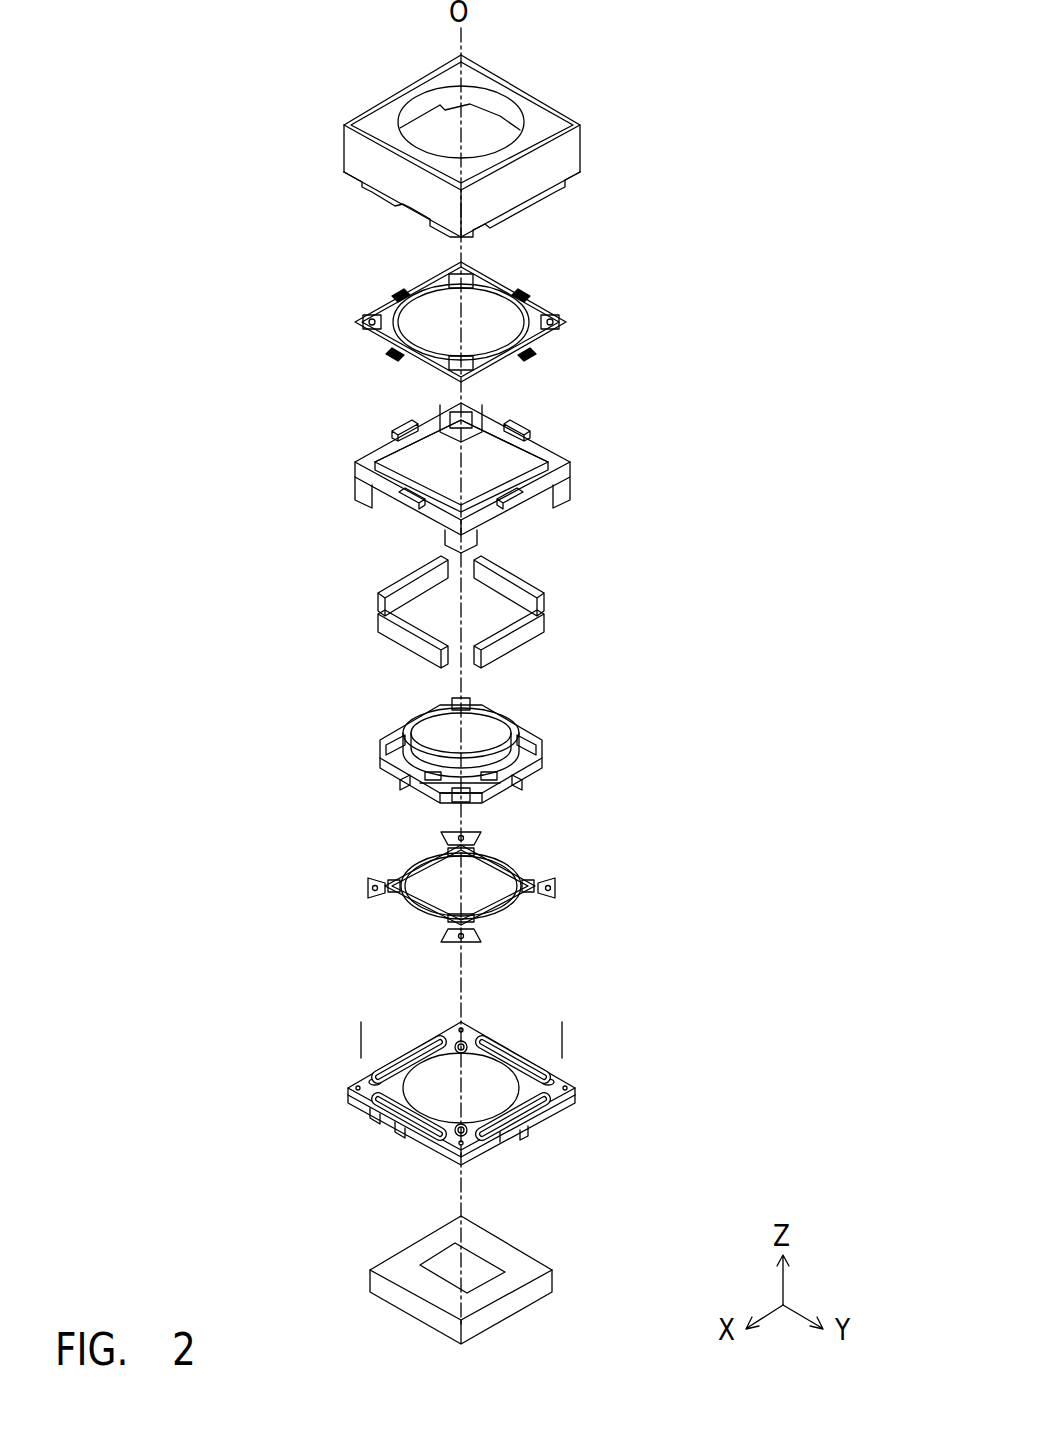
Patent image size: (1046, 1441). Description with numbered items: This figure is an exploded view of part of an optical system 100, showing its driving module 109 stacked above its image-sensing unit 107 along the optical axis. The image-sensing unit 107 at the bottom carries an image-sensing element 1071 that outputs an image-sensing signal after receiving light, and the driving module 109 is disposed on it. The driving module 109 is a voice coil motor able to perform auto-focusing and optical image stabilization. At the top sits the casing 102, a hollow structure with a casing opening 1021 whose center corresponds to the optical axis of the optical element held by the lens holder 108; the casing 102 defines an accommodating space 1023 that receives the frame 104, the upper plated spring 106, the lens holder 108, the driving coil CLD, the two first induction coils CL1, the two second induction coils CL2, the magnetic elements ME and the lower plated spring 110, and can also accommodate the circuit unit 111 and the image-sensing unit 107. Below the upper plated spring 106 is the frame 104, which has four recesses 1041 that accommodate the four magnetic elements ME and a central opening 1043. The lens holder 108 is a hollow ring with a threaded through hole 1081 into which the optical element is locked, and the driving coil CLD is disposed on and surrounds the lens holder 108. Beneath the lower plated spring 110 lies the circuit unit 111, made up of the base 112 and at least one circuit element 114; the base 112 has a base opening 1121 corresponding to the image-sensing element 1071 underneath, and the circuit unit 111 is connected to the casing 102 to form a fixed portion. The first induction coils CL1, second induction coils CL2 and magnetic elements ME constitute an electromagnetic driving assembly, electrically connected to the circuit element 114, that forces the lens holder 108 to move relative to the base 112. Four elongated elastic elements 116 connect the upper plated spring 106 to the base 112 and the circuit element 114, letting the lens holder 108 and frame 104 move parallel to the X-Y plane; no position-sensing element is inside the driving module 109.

The optical system 100 is at (822, 160).
The driving module 109 is at (152, 62).
The image-sensing unit 107 is at (435, 1243).
The image-sensing element 1071 is at (450, 1268).
The casing 102 is at (362, 112).
The casing opening 1021 is at (497, 115).
The accommodating space 1023 is at (556, 198).
The upper plated spring 106 is at (567, 322).
The frame 104 is at (565, 448).
The recesses 1041 is at (417, 408).
The central opening 1043 is at (420, 456).
The magnetic elements ME is at (378, 600).
The lens holder 108 is at (521, 722).
The through hole 1081 is at (430, 717).
The driving coil CLD is at (498, 790).
The lower plated spring 110 is at (553, 881).
The circuit unit 111 is at (668, 1072).
The base 112 is at (560, 1098).
The base opening 1121 is at (420, 1088).
The circuit element 114 is at (548, 1132).
The elastic elements 116 is at (465, 968).
The first induction coils CL1 is at (415, 1048).
The second induction coils CL2 is at (512, 1048).